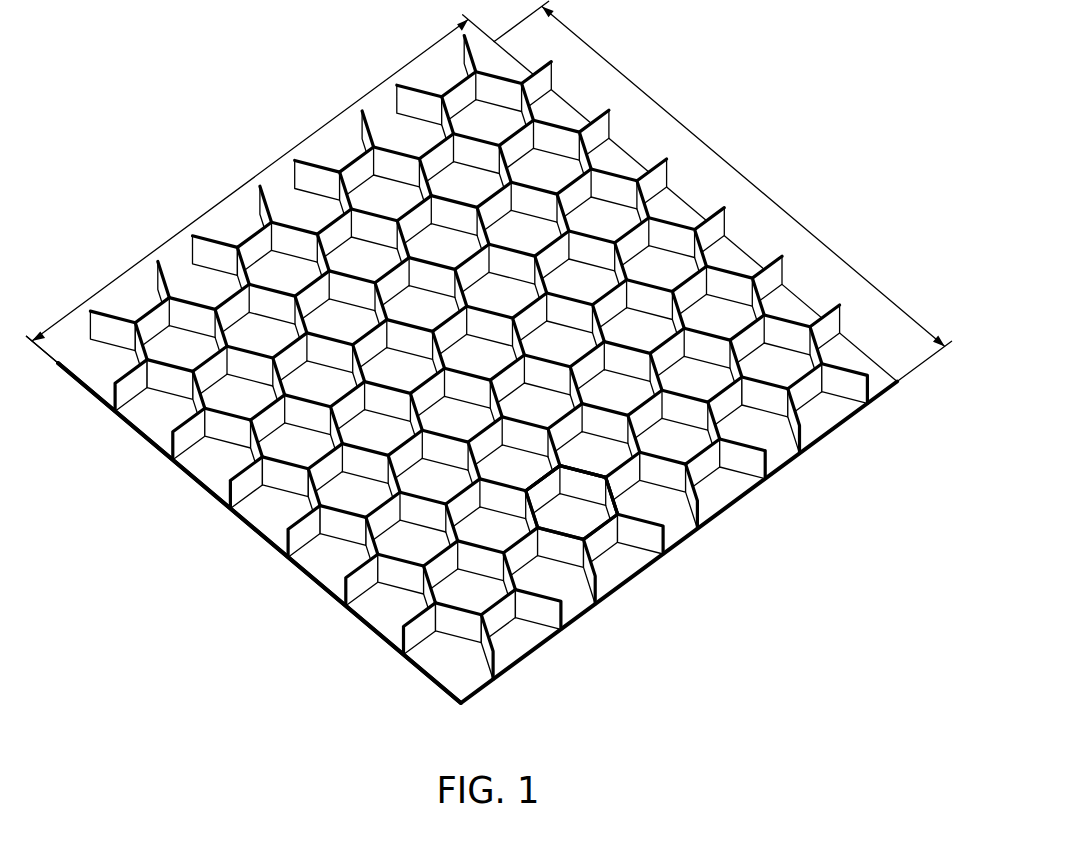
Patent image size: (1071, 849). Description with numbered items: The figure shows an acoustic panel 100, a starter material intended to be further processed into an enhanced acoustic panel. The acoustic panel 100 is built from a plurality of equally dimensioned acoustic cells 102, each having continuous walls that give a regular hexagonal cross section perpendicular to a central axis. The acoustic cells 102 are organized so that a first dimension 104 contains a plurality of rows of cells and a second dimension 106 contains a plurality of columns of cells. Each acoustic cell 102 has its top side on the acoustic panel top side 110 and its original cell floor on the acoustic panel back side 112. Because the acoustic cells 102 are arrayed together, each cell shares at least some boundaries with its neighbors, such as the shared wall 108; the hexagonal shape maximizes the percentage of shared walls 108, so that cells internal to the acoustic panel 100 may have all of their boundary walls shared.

The acoustic panel 100 is at (780, 137).
The acoustic cell 102 is at (612, 520).
The first dimension 104 is at (627, 79).
The second dimension 106 is at (326, 125).
The shared wall 108 is at (578, 516).
The acoustic panel top side 110 is at (85, 300).
The acoustic panel back side 112 is at (97, 398).